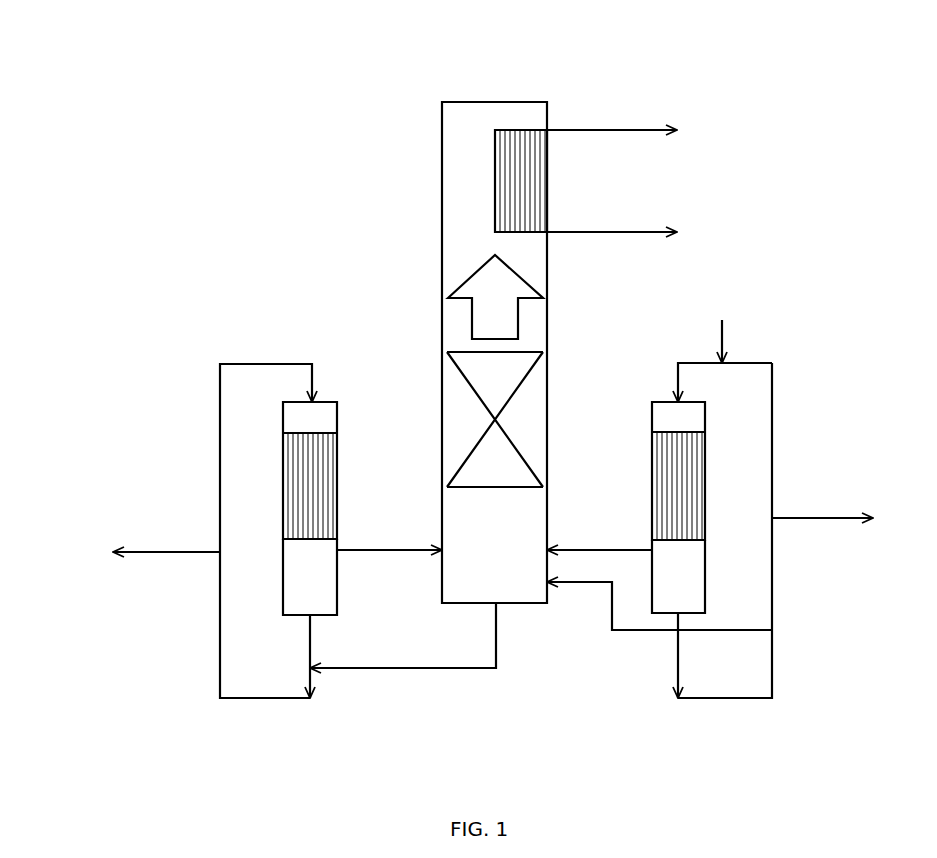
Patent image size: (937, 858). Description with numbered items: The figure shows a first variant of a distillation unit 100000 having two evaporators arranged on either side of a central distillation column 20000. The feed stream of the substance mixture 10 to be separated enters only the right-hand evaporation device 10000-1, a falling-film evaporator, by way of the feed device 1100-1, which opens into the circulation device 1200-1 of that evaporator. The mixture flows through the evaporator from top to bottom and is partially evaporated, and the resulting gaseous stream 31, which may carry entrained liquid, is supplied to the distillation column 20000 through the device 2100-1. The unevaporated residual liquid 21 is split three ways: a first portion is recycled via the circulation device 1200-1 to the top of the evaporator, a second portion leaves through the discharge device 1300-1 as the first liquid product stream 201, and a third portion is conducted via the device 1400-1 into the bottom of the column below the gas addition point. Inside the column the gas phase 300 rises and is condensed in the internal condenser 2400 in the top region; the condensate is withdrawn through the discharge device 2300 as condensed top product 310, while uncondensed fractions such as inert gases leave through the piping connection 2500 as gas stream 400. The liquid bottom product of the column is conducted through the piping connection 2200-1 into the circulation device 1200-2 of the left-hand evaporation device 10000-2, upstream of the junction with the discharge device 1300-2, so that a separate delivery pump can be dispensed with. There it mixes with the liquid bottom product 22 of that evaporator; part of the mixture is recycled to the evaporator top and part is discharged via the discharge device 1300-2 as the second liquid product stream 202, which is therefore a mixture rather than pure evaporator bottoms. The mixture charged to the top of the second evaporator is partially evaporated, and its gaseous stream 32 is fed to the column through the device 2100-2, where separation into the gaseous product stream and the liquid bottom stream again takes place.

The distillation unit 100000 is at (207, 130).
The distillation column 20000 is at (420, 145).
The gas phase 300 is at (495, 297).
The internal condenser 2400 is at (523, 168).
The piping connection 2500 is at (630, 124).
The gas stream 400 is at (609, 128).
The discharge device 2300 is at (578, 224).
The condensed top product 310 is at (610, 230).
The evaporation device 10000-1 is at (790, 290).
The feed stream of the substance mixture 10 is at (725, 328).
The feed device 1100-1 is at (725, 342).
The circulation device 1200-1 is at (775, 420).
The gaseous stream 31 is at (678, 482).
The unevaporated residual liquid 21 is at (678, 576).
The discharge device 1300-1 is at (822, 520).
The first liquid product stream 201 is at (848, 521).
The device 1400-1 is at (610, 632).
The device 2100-1 is at (597, 550).
The evaporation device 10000-2 is at (268, 328).
The circulation device 1200-2 is at (215, 427).
The gaseous stream 32 is at (310, 483).
The liquid bottom product 22 is at (310, 577).
The discharge device 1300-2 is at (150, 553).
The second liquid product stream 202 is at (140, 553).
The device 2100-2 is at (380, 548).
The piping connection 2200-1 is at (413, 672).